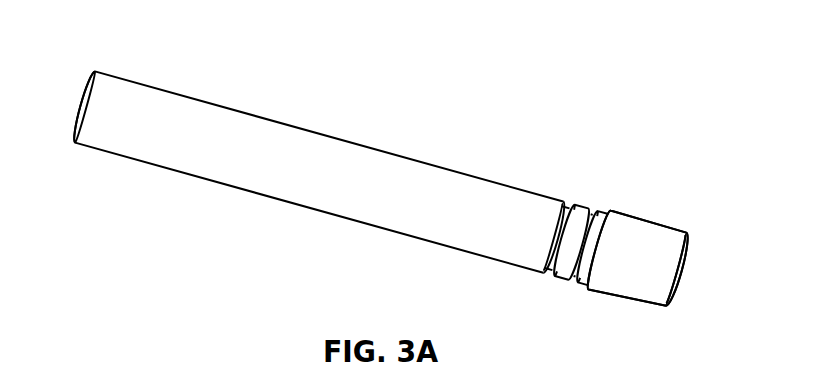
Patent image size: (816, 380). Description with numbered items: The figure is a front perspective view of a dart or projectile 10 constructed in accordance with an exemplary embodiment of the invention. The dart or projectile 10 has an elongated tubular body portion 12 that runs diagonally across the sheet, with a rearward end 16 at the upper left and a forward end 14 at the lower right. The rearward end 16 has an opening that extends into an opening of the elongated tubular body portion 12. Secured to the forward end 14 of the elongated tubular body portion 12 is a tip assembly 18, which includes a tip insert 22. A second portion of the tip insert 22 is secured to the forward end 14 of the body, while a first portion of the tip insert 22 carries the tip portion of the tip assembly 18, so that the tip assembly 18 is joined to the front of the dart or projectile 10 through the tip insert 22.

The dart or projectile 10 is at (507, 129).
The elongated tubular body portion 12 is at (325, 132).
The forward end 14 is at (558, 278).
The rearward end 16 is at (77, 98).
The tip assembly 18 is at (645, 216).
The tip insert 22 is at (663, 242).